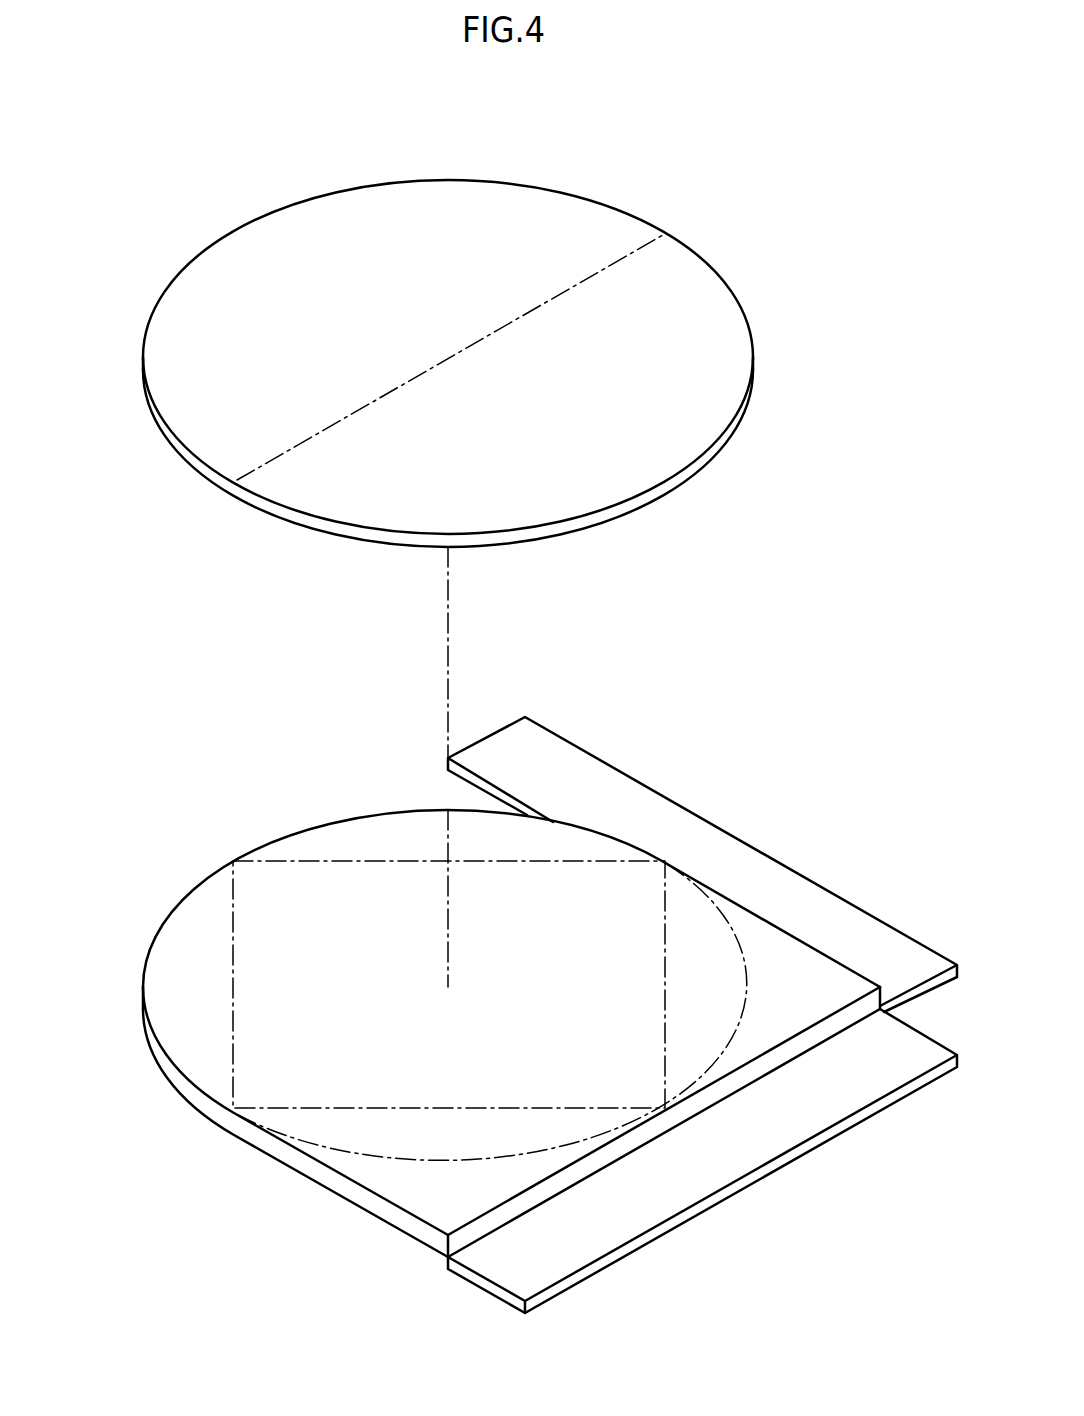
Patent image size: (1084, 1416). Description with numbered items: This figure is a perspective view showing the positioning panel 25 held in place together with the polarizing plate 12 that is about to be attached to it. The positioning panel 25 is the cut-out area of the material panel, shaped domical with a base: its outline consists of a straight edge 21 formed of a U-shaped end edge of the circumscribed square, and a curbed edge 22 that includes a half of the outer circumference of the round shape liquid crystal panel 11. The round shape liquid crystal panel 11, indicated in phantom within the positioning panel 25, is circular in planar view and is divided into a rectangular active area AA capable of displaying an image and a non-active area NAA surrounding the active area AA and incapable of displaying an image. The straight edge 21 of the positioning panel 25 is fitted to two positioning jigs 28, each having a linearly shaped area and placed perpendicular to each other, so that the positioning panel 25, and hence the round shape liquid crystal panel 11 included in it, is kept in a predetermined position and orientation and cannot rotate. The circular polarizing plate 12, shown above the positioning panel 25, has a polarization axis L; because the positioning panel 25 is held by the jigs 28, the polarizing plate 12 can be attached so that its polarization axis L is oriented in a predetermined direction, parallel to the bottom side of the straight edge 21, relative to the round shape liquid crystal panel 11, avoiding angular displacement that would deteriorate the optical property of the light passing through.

The polarizing plate 12 is at (705, 258).
The polarization axis L is at (483, 336).
The positioning panel 25 is at (132, 905).
The curbed edge 22 is at (205, 880).
The straight edge 21 is at (813, 947).
The positioning jig 28 is at (790, 893).
The round shape liquid crystal panel 11 is at (412, 1162).
The active area AA is at (555, 860).
The non-active area NAA is at (683, 893).